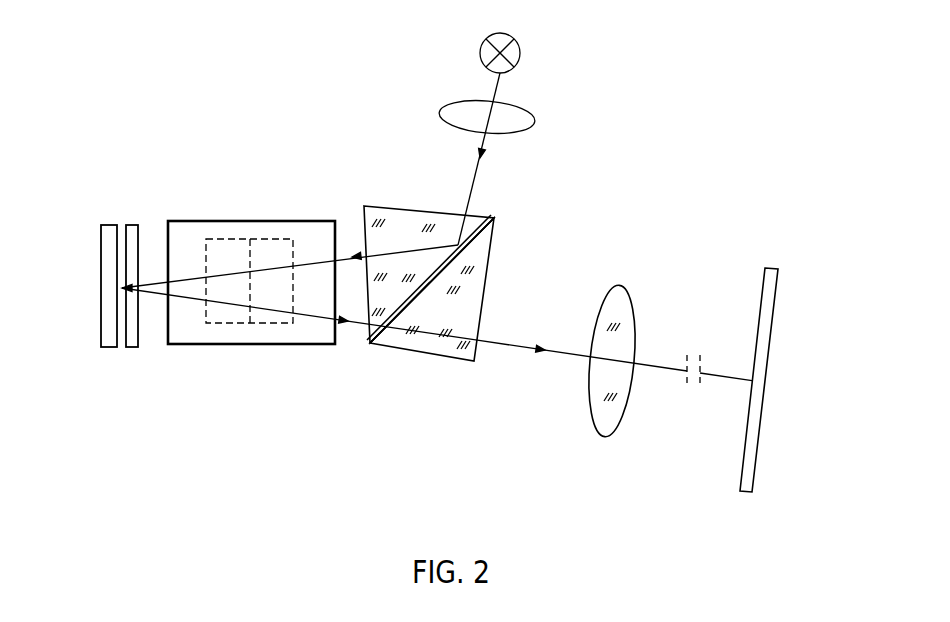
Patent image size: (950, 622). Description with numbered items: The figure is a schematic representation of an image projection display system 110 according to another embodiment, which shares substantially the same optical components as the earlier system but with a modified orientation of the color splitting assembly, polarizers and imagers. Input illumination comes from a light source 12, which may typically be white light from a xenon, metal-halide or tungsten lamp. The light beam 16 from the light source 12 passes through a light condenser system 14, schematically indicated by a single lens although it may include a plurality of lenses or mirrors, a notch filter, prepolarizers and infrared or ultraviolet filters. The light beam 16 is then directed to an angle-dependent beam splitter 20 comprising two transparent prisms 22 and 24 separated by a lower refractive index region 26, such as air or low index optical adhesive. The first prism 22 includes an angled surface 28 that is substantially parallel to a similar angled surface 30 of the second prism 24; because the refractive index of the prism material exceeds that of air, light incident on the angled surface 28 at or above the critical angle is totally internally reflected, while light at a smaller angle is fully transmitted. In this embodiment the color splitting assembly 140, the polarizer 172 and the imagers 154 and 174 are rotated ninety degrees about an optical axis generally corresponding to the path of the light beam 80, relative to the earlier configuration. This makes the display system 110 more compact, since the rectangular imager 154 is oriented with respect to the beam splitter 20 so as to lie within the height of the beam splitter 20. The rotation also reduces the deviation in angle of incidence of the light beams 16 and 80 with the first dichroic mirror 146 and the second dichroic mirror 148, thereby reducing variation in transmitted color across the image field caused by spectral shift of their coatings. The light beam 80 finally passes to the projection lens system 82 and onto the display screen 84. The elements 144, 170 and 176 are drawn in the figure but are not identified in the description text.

The image projection display system 110 is at (571, 72).
The light source 12 is at (515, 53).
The light condenser system 14 is at (520, 120).
The light beam 16 is at (475, 188).
The angle-dependent beam splitter 20 is at (530, 240).
The first prism 22 is at (420, 218).
The second prism 24 is at (435, 347).
The lower refractive index region 26 is at (372, 347).
The angled surface 28 is at (407, 303).
The angled surface 30 is at (418, 302).
The color splitting assembly 140 is at (248, 188).
The active display area 144 is at (228, 325).
The first dichroic mirror 146 is at (270, 250).
The second dichroic mirror 148 is at (227, 252).
The imager 154 is at (278, 337).
The eyepiece assembly 170 is at (153, 283).
The polarizer 172 is at (131, 347).
The imager 174 is at (110, 347).
The viewing light cone 176 is at (152, 292).
The light beam 80 is at (497, 347).
The projection lens system 82 is at (603, 432).
The display screen 84 is at (744, 483).